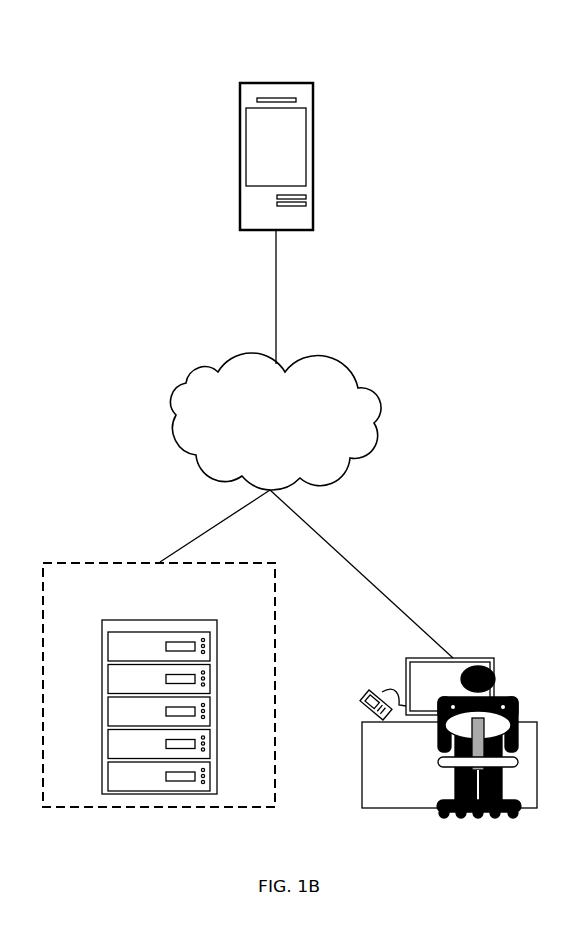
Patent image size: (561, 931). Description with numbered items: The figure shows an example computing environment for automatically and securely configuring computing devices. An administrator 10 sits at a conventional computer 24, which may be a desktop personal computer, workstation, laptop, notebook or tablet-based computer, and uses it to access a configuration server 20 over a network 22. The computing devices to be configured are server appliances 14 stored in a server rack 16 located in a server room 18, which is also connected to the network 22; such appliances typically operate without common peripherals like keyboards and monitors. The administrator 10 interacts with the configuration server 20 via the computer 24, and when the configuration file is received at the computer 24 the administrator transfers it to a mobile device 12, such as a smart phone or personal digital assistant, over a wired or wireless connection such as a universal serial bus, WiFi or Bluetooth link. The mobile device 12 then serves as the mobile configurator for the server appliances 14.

The administrator 10 is at (433, 711).
The mobile device 12 is at (363, 694).
The server appliances 14 is at (110, 782).
The server rack 16 is at (217, 787).
The server room 18 is at (230, 585).
The configuration server 20 is at (313, 83).
The network 22 is at (328, 430).
The computer 24 is at (463, 658).